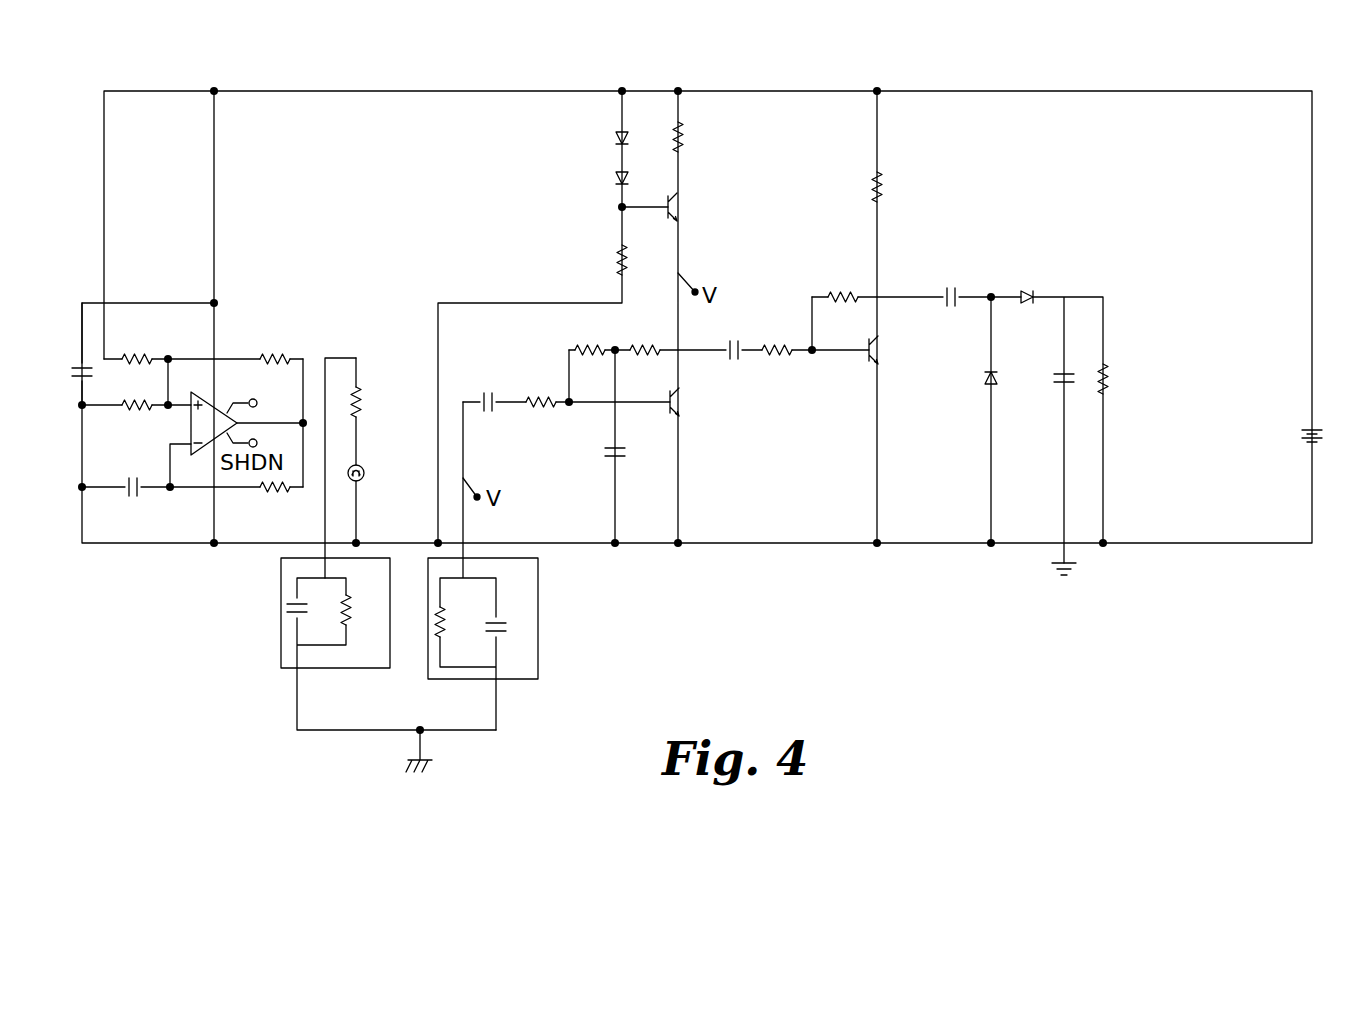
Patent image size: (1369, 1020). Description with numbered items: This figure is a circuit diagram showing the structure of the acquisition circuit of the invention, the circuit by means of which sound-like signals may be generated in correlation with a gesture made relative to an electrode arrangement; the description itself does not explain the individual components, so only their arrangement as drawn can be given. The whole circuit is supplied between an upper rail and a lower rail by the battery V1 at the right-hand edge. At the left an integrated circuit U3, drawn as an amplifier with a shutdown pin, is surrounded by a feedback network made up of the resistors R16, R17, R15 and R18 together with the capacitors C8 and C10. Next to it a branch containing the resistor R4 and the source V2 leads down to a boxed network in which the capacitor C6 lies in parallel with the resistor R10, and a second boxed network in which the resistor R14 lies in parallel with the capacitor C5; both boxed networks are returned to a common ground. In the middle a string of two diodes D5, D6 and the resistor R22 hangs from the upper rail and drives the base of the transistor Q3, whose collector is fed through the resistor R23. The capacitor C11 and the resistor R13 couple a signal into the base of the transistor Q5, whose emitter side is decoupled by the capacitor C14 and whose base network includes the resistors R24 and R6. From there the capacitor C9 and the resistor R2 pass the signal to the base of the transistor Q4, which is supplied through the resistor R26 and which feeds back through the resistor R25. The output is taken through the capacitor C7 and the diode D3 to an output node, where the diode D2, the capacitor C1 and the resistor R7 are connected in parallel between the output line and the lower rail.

The capacitor C8 is at (64, 354).
The resistor R16 is at (136, 344).
The resistor R17 is at (235, 344).
The resistor R15 is at (125, 393).
The operational amplifier U3 is at (215, 410).
The capacitor C10 is at (126, 473).
The resistor R18 is at (236, 501).
The resistor R4 is at (374, 411).
The voltage source V2 is at (371, 494).
The capacitor C6 is at (310, 612).
The resistor R10 is at (357, 604).
The resistor R14 is at (454, 616).
The capacitor C5 is at (507, 622).
The diode D5 is at (604, 140).
The diode D6 is at (604, 182).
The resistor R22 is at (595, 261).
The resistor R23 is at (705, 137).
The transistor Q3 is at (649, 195).
The capacitor C11 is at (494, 389).
The resistor R13 is at (544, 417).
The transistor Q5 is at (654, 392).
The capacitor C14 is at (639, 452).
The resistor R24 is at (587, 337).
The resistor R6 is at (645, 337).
The capacitor C9 is at (732, 336).
The resistor R2 is at (778, 337).
The transistor Q4 is at (852, 364).
The resistor R26 is at (903, 187).
The resistor R25 is at (841, 283).
The capacitor C7 is at (947, 283).
The diode D3 is at (1025, 285).
The diode D2 is at (972, 382).
The capacitor C1 is at (1046, 382).
The resistor R7 is at (1119, 381).
The battery V1 is at (1330, 439).